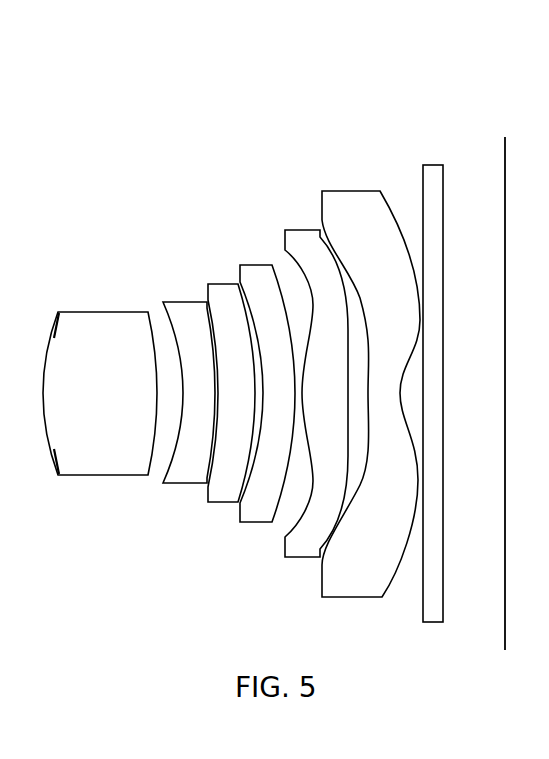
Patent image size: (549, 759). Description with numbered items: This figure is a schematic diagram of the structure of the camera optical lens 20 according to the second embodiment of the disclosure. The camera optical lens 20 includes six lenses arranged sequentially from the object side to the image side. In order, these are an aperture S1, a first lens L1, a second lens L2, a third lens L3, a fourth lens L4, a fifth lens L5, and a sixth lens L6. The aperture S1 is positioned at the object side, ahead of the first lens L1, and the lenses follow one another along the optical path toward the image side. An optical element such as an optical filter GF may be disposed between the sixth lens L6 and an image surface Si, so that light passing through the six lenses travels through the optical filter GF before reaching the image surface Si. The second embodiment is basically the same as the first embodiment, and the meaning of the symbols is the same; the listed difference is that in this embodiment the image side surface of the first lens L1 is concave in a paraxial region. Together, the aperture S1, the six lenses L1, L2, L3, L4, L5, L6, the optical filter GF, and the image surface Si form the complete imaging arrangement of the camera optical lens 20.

The camera optical lens 20 is at (294, 54).
The aperture S1 is at (47, 389).
The first lens L1 is at (100, 383).
The second lens L2 is at (189, 382).
The third lens L3 is at (231, 384).
The fourth lens L4 is at (267, 384).
The fifth lens L5 is at (316, 384).
The sixth lens L6 is at (371, 384).
The optical filter GF is at (433, 383).
The image surface Si is at (503, 384).